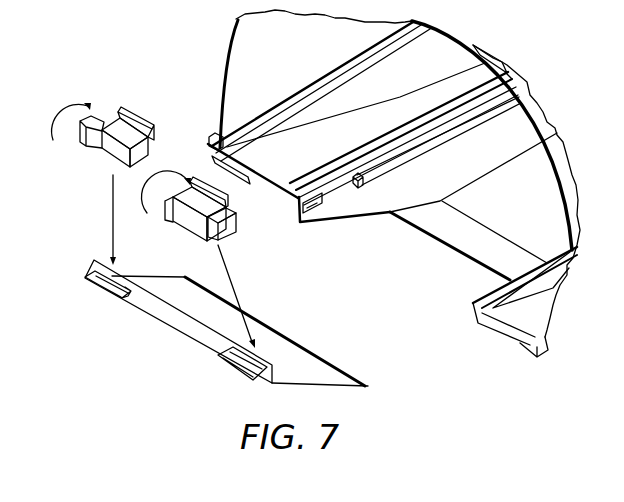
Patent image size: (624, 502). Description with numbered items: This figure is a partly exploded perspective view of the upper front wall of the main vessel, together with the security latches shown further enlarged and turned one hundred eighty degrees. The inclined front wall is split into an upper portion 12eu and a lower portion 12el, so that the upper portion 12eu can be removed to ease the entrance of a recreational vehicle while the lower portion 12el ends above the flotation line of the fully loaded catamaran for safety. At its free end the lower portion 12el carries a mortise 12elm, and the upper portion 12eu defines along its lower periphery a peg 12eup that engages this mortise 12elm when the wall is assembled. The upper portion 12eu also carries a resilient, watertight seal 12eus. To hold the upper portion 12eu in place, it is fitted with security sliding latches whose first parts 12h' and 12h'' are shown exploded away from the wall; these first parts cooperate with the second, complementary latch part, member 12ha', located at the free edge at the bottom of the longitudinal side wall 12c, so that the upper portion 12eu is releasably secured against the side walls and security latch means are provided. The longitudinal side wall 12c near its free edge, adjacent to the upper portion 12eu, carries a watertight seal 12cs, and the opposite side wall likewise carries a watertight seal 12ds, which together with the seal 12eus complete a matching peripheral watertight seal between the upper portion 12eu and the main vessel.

The first part of security sliding latch 12h' is at (83, 119).
The first part of security sliding latch 12h'' is at (166, 146).
The second part of complementary security latch 12ha' is at (277, 234).
The longitudinal side wall 12c is at (462, 181).
The watertight seal 12cs is at (333, 225).
The mortise 12elm is at (452, 256).
The lower portion of front wall 12el is at (490, 251).
The resilient watertight seal 12eus is at (300, 333).
The watertight seal 12ds is at (466, 328).
The peg 12eup is at (372, 384).
The upper portion of front wall 12eu is at (352, 384).